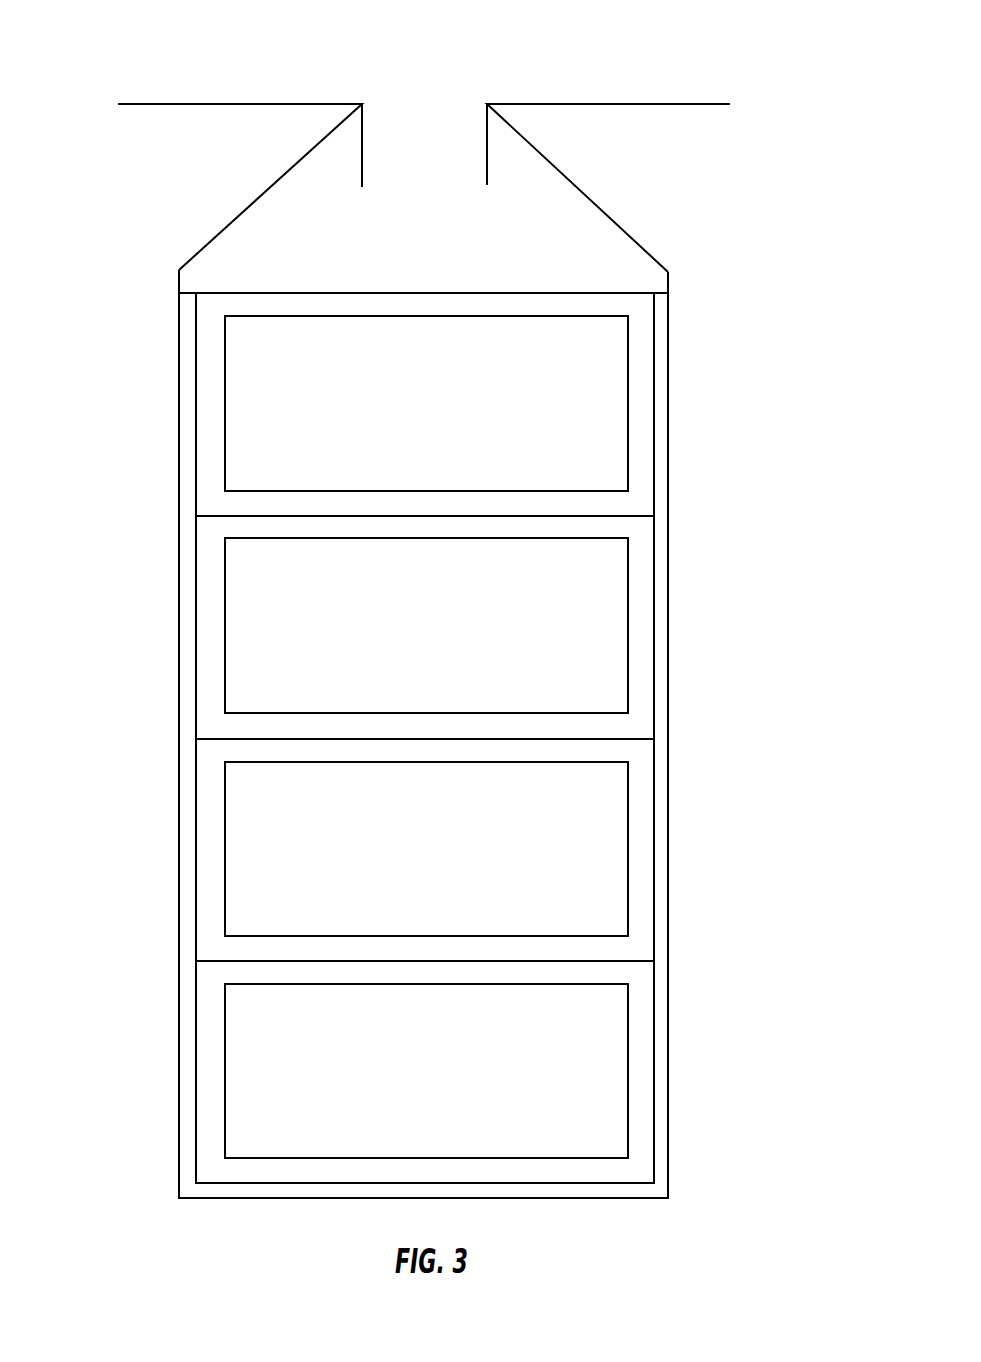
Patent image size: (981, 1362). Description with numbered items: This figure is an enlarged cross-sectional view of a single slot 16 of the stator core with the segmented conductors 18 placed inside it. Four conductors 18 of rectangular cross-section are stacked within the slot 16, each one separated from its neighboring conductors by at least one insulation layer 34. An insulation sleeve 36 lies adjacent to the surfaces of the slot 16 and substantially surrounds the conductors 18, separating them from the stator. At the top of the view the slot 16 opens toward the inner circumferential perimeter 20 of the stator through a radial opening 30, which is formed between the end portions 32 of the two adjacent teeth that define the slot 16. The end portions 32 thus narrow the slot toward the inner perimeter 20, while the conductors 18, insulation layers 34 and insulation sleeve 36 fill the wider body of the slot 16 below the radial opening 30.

The stator slot 16 is at (593, 258).
The segmented conductor 18 is at (253, 417).
The inner circumferential perimeter 20 is at (465, 136).
The radial opening 30 is at (403, 152).
The end portion 32 is at (280, 145).
The insulation layer 34 is at (638, 373).
The insulation sleeve 36 is at (186, 694).